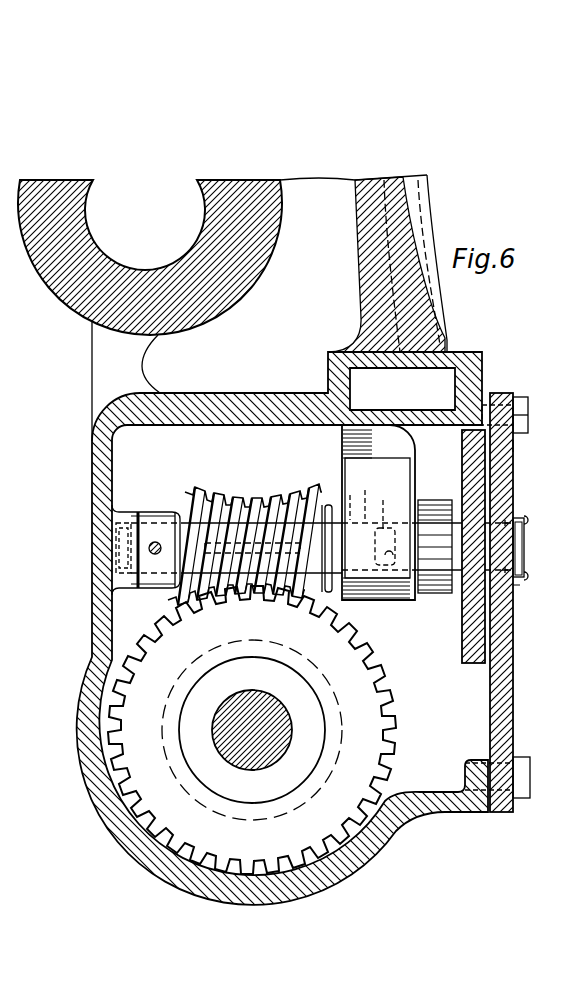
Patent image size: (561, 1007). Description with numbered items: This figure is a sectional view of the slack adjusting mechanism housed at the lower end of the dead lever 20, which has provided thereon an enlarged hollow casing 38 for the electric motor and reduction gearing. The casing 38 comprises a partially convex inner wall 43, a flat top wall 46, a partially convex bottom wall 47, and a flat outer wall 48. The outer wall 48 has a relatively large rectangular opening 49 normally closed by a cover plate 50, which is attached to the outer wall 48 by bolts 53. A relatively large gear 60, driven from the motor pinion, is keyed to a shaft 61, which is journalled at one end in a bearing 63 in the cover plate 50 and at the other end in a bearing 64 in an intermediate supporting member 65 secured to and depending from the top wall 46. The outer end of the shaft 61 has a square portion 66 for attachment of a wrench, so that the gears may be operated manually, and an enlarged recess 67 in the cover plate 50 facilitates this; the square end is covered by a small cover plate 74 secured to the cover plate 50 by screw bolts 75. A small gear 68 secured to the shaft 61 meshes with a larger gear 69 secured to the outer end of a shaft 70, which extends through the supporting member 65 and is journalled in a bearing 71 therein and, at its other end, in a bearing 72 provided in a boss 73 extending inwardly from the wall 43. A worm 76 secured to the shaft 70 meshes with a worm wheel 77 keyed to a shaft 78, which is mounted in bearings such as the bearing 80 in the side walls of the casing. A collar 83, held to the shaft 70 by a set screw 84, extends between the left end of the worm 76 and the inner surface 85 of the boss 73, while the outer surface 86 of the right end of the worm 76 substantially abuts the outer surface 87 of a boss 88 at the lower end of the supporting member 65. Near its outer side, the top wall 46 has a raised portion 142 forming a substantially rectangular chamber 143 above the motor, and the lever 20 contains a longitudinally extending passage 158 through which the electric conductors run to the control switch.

The dead lever 20 is at (430, 189).
The longitudinally extending passage 158 is at (400, 278).
The raised portion 142 is at (457, 355).
The rectangular chamber 143 is at (402, 389).
The top wall 46 is at (222, 398).
The casing 38 is at (104, 404).
The intermediate supporting member 65 is at (342, 455).
The outer surface 86 is at (330, 500).
The bearing 72 is at (132, 512).
The set screw 84 is at (158, 542).
The inner surface 85 is at (140, 515).
The worm 76 is at (233, 495).
The shaft 70 is at (358, 500).
The bearing 71 is at (377, 500).
The shaft 61 is at (523, 621).
The larger gear 69 is at (432, 500).
The bolts 53 is at (523, 433).
The bearing 63 is at (512, 490).
The screw bolts 75 is at (524, 520).
The boss 88 is at (345, 530).
The outer surface 87 is at (345, 558).
The square portion 66 is at (524, 545).
The enlarged recess 67 is at (524, 557).
The inner wall 43 is at (100, 552).
The small cover plate 74 is at (515, 582).
The boss 73 is at (126, 589).
The collar 83 is at (165, 590).
The bearing 64 is at (392, 583).
The small gear 68 is at (458, 595).
The worm wheel 77 is at (335, 643).
The cover plate 50 is at (511, 648).
The relatively large gear 60 is at (470, 652).
The bearing 80 is at (290, 700).
The rectangular opening 49 is at (478, 703).
The shaft 78 is at (222, 728).
The outer wall 48 is at (475, 760).
The bottom wall 47 is at (290, 895).